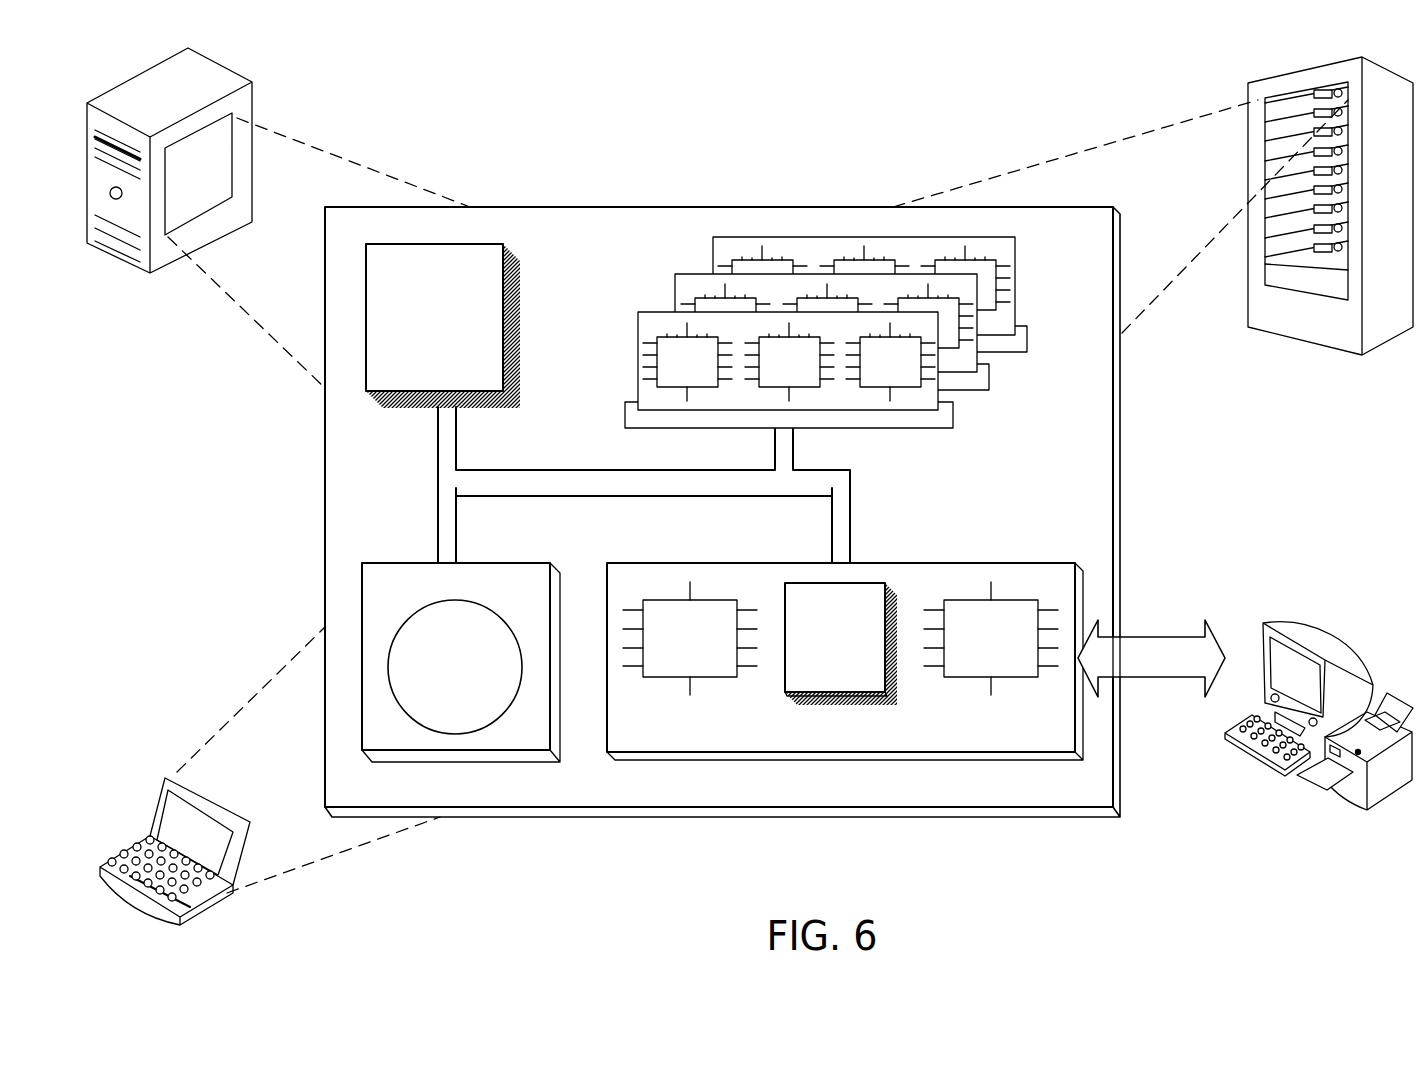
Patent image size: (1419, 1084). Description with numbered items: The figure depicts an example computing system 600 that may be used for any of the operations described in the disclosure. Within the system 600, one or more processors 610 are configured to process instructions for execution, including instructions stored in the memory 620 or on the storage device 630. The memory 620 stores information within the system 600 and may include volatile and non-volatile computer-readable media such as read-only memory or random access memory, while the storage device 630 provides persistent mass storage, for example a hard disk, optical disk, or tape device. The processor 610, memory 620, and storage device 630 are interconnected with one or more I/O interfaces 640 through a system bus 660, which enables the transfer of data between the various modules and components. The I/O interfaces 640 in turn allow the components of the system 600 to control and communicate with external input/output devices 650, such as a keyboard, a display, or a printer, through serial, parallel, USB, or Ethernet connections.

The computing system 600 is at (537, 125).
The processor 610 is at (455, 384).
The memory 620 is at (1018, 386).
The storage device 630 is at (502, 744).
The input/output interface 640 is at (977, 742).
The input/output device 650 is at (1265, 630).
The system bus 660 is at (638, 488).